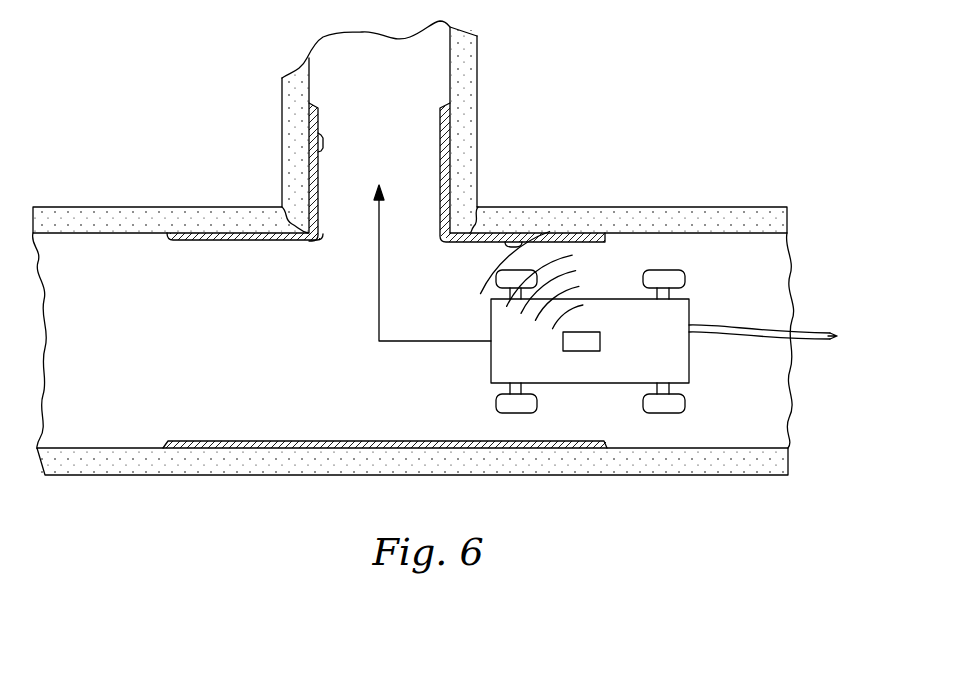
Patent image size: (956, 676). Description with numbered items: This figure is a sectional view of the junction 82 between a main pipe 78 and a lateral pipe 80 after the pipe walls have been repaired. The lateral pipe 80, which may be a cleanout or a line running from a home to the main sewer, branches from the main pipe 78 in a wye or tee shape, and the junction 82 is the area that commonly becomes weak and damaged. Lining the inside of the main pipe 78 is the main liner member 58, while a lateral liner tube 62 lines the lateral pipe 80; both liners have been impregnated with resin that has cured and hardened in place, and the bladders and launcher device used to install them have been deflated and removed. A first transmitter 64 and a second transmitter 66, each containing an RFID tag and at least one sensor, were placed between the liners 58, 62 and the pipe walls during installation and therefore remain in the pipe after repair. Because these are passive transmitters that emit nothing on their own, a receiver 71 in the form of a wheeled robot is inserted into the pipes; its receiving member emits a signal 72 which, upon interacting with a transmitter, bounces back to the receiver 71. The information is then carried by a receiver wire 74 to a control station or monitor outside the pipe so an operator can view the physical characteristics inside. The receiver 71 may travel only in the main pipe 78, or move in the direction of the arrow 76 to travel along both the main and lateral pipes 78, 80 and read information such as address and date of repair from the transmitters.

The main liner member 58 is at (190, 237).
The lateral liner tube 62 is at (315, 163).
The first transmitter 64 is at (513, 237).
The second transmitter 66 is at (323, 139).
The receiver 71 is at (577, 348).
The signal 72 is at (485, 287).
The receiver wire 74 is at (730, 332).
The arrow 76 is at (378, 290).
The main pipe 78 is at (697, 215).
The lateral pipe 80 is at (478, 118).
The junction 82 is at (480, 207).